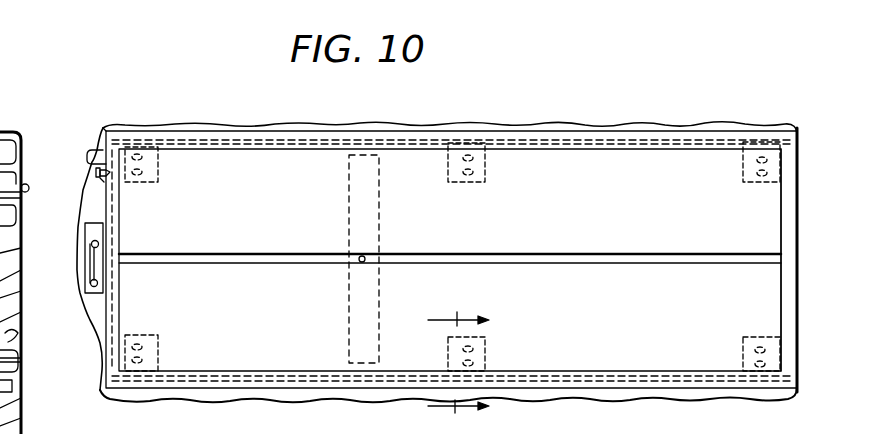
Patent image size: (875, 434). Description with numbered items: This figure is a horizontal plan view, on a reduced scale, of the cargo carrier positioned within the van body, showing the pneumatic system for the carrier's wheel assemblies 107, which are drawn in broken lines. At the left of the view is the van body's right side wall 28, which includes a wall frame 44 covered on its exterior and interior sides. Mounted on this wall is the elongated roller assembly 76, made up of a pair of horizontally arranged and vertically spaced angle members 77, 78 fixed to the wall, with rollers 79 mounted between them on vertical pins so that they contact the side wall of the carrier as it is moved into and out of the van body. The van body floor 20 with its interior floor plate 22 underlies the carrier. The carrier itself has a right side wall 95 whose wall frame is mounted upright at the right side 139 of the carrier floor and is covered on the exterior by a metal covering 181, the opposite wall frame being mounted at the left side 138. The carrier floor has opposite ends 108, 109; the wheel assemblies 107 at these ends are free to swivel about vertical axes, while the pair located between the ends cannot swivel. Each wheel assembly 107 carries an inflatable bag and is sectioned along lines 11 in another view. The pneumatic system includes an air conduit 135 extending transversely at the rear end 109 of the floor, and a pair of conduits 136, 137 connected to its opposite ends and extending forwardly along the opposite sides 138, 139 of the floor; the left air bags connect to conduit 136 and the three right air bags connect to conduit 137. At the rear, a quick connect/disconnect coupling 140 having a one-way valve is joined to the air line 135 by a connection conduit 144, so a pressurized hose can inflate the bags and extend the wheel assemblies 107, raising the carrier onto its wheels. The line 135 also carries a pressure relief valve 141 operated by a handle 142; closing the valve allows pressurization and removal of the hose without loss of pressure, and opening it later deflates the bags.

The rectangular floor 20 is at (783, 283).
The interior floor plate 22 is at (778, 200).
The right side wall 28 is at (21, 142).
The wall frame 44 is at (18, 333).
The roller assembly 76 is at (21, 291).
The angle member 77 is at (21, 248).
The angle member 78 is at (21, 312).
The rollers 79 is at (21, 270).
The right side wall 95 is at (21, 398).
The wheel assemblies 107 is at (160, 180).
The end of the floor 108 is at (790, 224).
The rear end of the floor 109 is at (112, 357).
The Lines 11— 11 is at (458, 364).
The air conduit 135 is at (122, 228).
The conduit 136 is at (176, 128).
The conduit 137 is at (222, 371).
The left side of the floor 138 is at (565, 130).
The right side of the floor 139 is at (618, 393).
The coupling 140 is at (88, 156).
The pressure relief valve 141 is at (100, 178).
The handle 142 is at (94, 172).
The connection conduit 144 is at (100, 128).
The metal covering 181 is at (21, 418).